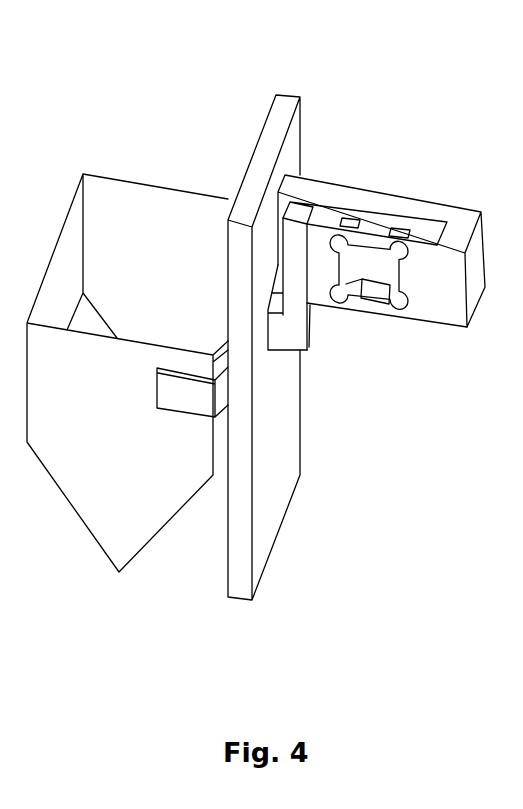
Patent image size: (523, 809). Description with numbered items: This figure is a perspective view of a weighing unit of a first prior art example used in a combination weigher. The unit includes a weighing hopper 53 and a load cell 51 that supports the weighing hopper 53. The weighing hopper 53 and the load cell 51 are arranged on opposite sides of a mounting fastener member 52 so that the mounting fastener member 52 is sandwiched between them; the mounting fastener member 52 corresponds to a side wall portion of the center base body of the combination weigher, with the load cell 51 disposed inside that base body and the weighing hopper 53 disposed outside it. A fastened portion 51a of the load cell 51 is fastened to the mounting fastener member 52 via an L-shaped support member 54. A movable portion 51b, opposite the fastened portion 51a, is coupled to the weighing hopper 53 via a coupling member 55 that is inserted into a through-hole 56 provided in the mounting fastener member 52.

The load cell 51 is at (375, 322).
The fastened portion 51a is at (417, 313).
The movable portion 51b is at (327, 298).
The mounting fastener member 52 is at (287, 100).
The weighing hopper 53 is at (160, 183).
The L-shaped support member 54 is at (470, 209).
The coupling member 55 is at (293, 348).
The through-hole 56 is at (270, 350).